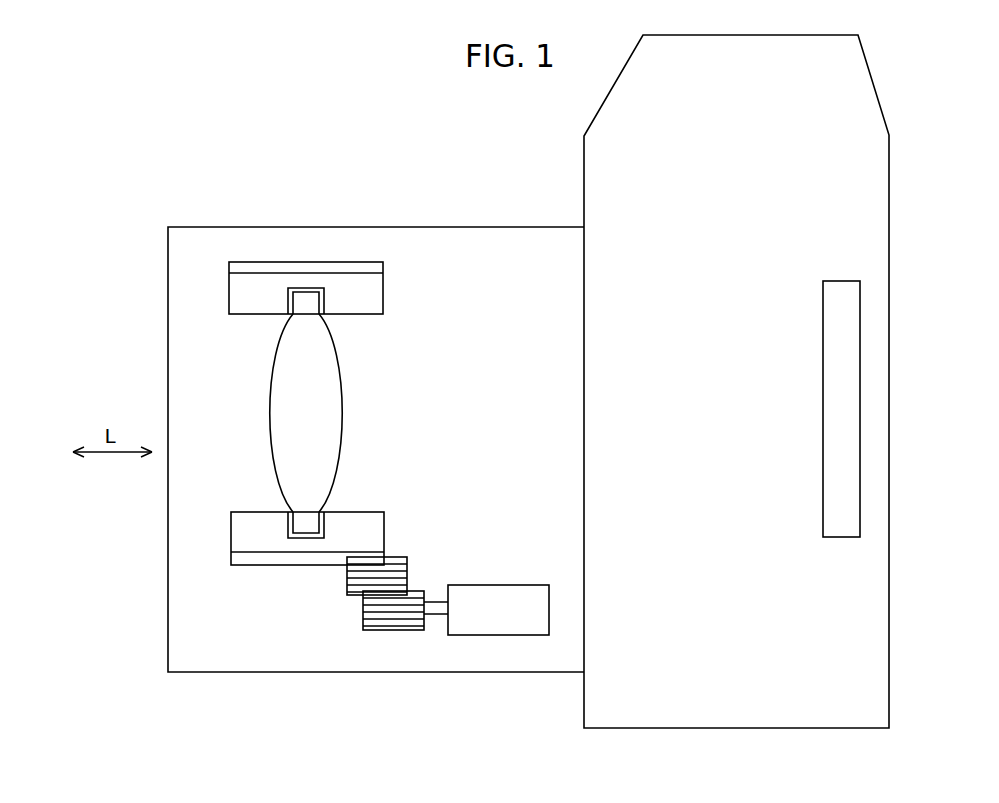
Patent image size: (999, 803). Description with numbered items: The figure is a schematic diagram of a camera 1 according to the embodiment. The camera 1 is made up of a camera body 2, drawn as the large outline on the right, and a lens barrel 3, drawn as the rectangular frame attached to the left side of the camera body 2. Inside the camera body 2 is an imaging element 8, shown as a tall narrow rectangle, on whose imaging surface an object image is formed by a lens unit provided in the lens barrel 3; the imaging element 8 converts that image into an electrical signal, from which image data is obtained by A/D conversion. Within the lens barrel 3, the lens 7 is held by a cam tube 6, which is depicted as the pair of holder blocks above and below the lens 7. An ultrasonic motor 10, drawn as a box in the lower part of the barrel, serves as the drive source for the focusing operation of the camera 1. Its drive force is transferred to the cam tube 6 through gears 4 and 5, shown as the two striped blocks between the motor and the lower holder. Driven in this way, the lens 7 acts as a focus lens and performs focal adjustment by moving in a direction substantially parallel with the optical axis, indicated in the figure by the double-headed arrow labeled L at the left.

The camera 1 is at (933, 152).
The camera body 2 is at (767, 712).
The lens barrel 3 is at (505, 246).
The gear 4 is at (402, 618).
The gear 5 is at (358, 588).
The cam tube 6 is at (257, 553).
The lens 7 is at (332, 413).
The imaging element 8 is at (832, 395).
The ultrasonic motor 10 is at (493, 600).